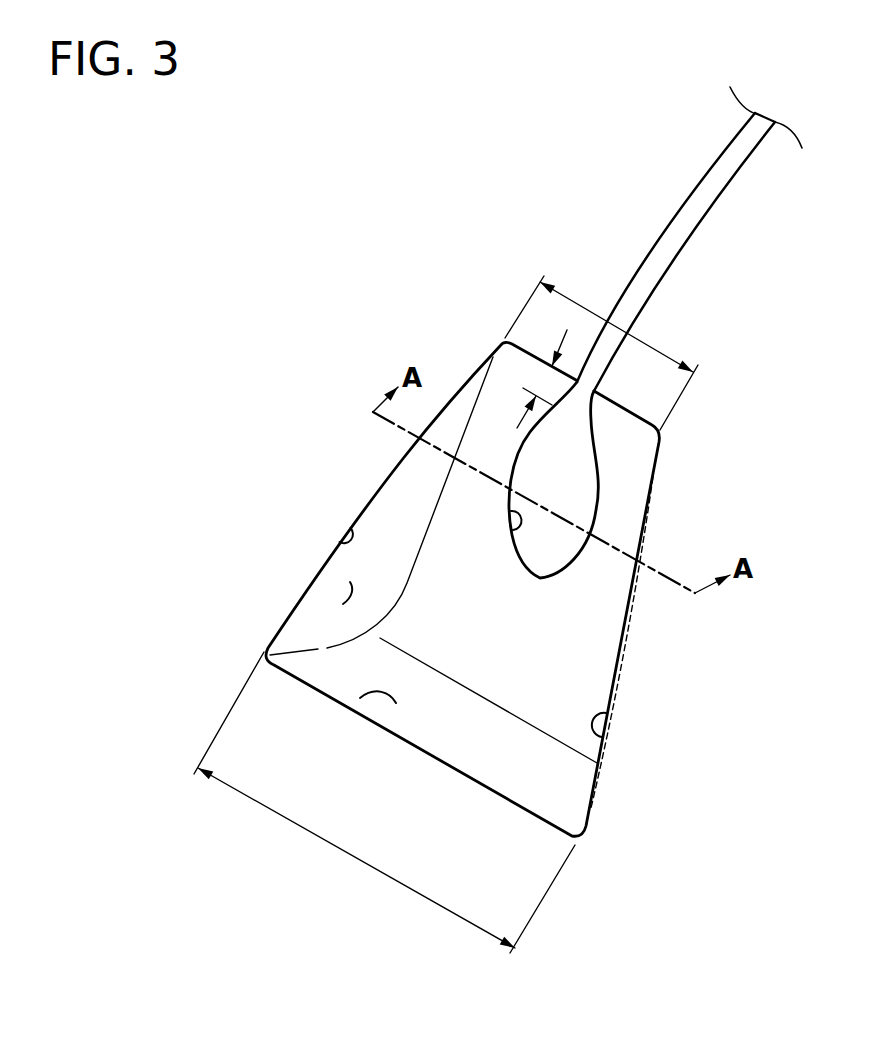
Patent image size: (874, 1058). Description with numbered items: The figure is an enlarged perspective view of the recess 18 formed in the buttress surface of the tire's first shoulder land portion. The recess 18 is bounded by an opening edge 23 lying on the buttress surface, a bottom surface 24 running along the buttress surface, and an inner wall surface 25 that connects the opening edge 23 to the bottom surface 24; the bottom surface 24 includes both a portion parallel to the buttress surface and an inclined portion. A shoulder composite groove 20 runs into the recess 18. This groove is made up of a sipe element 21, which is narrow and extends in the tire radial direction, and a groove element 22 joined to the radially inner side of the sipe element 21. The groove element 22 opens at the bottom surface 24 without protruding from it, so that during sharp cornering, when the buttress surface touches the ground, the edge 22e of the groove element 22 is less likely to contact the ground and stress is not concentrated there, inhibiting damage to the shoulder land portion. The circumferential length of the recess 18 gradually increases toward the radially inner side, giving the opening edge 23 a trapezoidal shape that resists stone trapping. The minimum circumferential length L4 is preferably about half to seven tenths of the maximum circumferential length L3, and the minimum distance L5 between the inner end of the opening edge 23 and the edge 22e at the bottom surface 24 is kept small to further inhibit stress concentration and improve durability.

The recess 18 is at (578, 598).
The shoulder composite groove 20 is at (687, 275).
The sipe element 21 is at (713, 182).
The groove element 22 is at (557, 476).
The edge of the groove element 22e is at (513, 542).
The opening edge 23 is at (343, 544).
The bottom surface 24 is at (508, 663).
The inner wall surface 25 is at (343, 604).
The maximum length L3 is at (384, 802).
The minimum length L4 is at (579, 303).
The minimum distance L5 is at (542, 380).